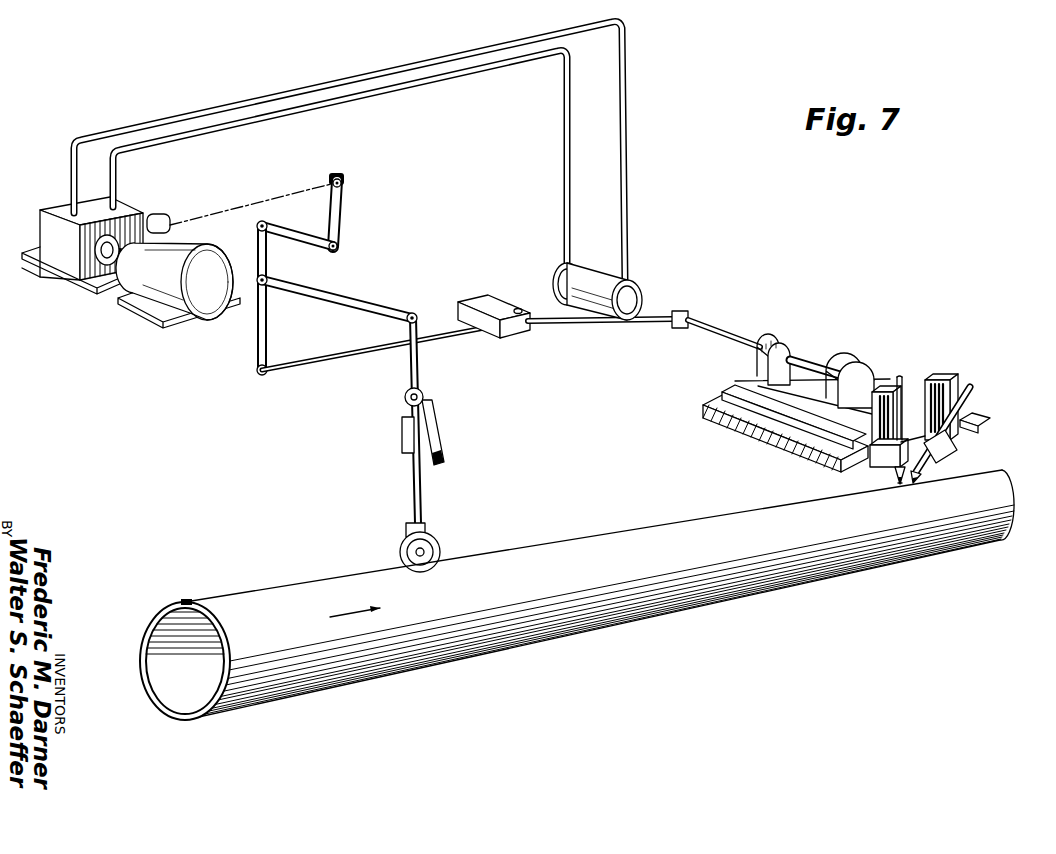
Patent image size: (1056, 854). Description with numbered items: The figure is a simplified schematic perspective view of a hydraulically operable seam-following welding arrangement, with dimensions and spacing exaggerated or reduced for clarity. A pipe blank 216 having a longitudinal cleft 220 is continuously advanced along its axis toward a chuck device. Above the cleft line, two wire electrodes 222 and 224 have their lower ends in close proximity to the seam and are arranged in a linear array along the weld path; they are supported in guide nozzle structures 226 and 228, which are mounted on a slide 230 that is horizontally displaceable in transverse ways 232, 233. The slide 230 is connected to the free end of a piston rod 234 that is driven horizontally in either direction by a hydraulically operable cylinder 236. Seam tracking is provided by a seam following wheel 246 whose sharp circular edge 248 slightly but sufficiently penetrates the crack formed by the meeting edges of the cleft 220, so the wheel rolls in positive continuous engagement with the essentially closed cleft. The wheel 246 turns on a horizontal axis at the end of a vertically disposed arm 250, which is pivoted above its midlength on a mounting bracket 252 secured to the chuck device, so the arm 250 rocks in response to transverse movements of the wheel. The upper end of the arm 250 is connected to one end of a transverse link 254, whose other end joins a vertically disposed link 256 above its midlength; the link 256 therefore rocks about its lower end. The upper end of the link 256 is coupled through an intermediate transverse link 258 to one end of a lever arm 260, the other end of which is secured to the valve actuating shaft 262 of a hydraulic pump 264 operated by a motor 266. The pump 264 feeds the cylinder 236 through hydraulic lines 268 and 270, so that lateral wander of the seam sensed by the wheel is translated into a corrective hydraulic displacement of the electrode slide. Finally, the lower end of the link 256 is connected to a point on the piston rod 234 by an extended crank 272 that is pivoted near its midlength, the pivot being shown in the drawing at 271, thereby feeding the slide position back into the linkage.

The pipe blank 216 is at (577, 627).
The longitudinal cleft 220 is at (191, 601).
The wire electrode 222 is at (898, 482).
The wire electrode 224 is at (915, 480).
The guide nozzle structure 226 is at (881, 467).
The guide nozzle structure 228 is at (952, 455).
The slide 230 is at (748, 380).
The transverse way 232 is at (720, 393).
The transverse way 233 is at (976, 420).
The piston rod 234 is at (740, 335).
The hydraulically operable cylinder 236 is at (642, 292).
The seam following wheel 246 is at (438, 545).
The sharp circular edge 248 is at (404, 556).
The arm 250 is at (421, 500).
The mounting bracket 252 is at (446, 445).
The transverse link 254 is at (387, 287).
The vertically disposed link 256 is at (268, 340).
The intermediate transverse link 258 is at (303, 248).
The lever arm 260 is at (341, 213).
The valve actuating shaft 262 is at (268, 191).
The hydraulic pump 264 is at (54, 268).
The motor 266 is at (200, 324).
The hydraulic line 268 is at (146, 113).
The hydraulic line 270 is at (193, 135).
The support block 271 is at (488, 296).
The extended crank 272 is at (583, 327).